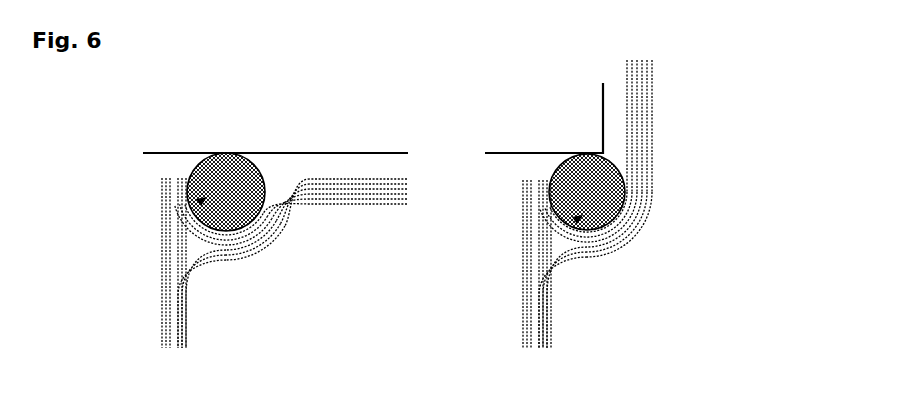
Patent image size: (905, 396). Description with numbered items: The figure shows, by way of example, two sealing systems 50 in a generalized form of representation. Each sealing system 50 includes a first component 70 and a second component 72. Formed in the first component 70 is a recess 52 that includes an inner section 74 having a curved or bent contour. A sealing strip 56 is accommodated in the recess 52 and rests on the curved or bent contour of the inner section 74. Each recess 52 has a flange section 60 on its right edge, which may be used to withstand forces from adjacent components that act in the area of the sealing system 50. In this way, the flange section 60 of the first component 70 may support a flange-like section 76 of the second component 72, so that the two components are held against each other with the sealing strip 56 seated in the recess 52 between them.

The sealing system 50 is at (121, 134).
The recess 52 is at (238, 236).
The sealing strip 56 is at (212, 157).
The flange section 60 is at (352, 190).
The first component 70 is at (273, 223).
The second component 72 is at (258, 153).
The inner section 74 is at (203, 200).
The flange-like section 76 is at (338, 152).